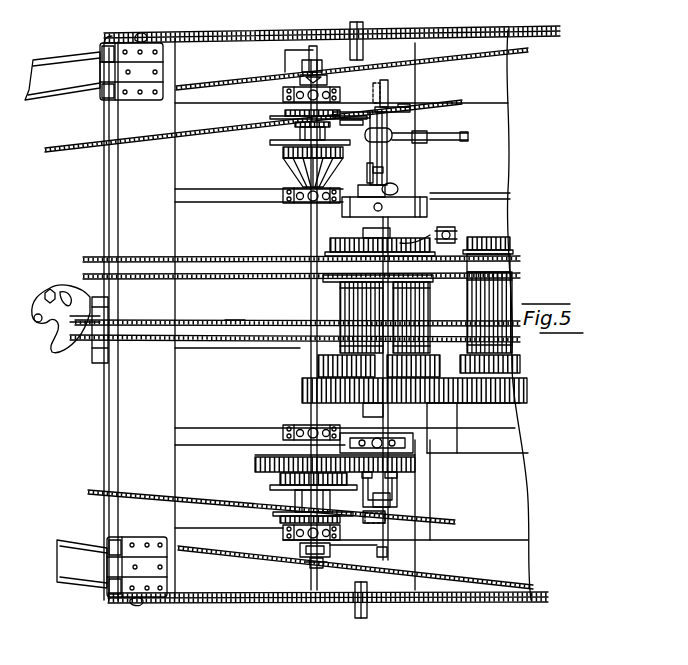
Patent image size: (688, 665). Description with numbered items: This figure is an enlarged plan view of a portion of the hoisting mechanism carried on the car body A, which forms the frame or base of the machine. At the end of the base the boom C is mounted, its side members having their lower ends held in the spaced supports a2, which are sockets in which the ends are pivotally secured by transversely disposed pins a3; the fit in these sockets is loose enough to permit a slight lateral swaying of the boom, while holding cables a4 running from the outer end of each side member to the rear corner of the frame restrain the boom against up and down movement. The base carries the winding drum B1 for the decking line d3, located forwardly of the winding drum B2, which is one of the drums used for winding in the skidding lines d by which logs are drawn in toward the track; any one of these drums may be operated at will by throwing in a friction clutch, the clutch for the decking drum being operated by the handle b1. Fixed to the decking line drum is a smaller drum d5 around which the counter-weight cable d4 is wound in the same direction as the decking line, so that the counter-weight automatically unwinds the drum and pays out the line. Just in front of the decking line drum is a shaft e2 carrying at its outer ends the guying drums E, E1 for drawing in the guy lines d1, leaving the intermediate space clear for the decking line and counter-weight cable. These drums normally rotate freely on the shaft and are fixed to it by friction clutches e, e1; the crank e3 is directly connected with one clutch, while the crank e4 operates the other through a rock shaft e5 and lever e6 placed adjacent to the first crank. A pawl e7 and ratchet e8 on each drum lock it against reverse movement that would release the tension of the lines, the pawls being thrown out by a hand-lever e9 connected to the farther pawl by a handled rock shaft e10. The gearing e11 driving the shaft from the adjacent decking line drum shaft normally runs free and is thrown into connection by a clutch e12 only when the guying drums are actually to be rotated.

The car body A is at (317, 315).
The spaced supports a2 is at (116, 46).
The transversely disposed pins a3 is at (147, 36).
The holding cables a4 is at (230, 86).
The boom C is at (57, 66).
The guy lines d1 is at (97, 137).
The decking line d3 is at (152, 320).
The counter-weight cable d4 is at (140, 256).
The skidding lines d is at (232, 320).
The drum d5 is at (323, 253).
The friction clutch e is at (282, 156).
The friction clutch e1 is at (283, 487).
The shaft e2 is at (310, 298).
The crank e3 is at (300, 50).
The crank e4 is at (320, 560).
The rock shaft e5 is at (392, 120).
The lever e6 is at (382, 101).
The pawl e7 is at (350, 112).
The ratchet e8 is at (273, 118).
The hand-lever e9 is at (345, 120).
The handled rock shaft e10 is at (373, 82).
The gearing e11 is at (255, 462).
The clutch e12 is at (398, 489).
The guying drum E is at (273, 143).
The guying drum E1 is at (270, 481).
The handle b1 is at (367, 160).
The winding drum B1 is at (340, 341).
The winding drum B2 is at (503, 292).